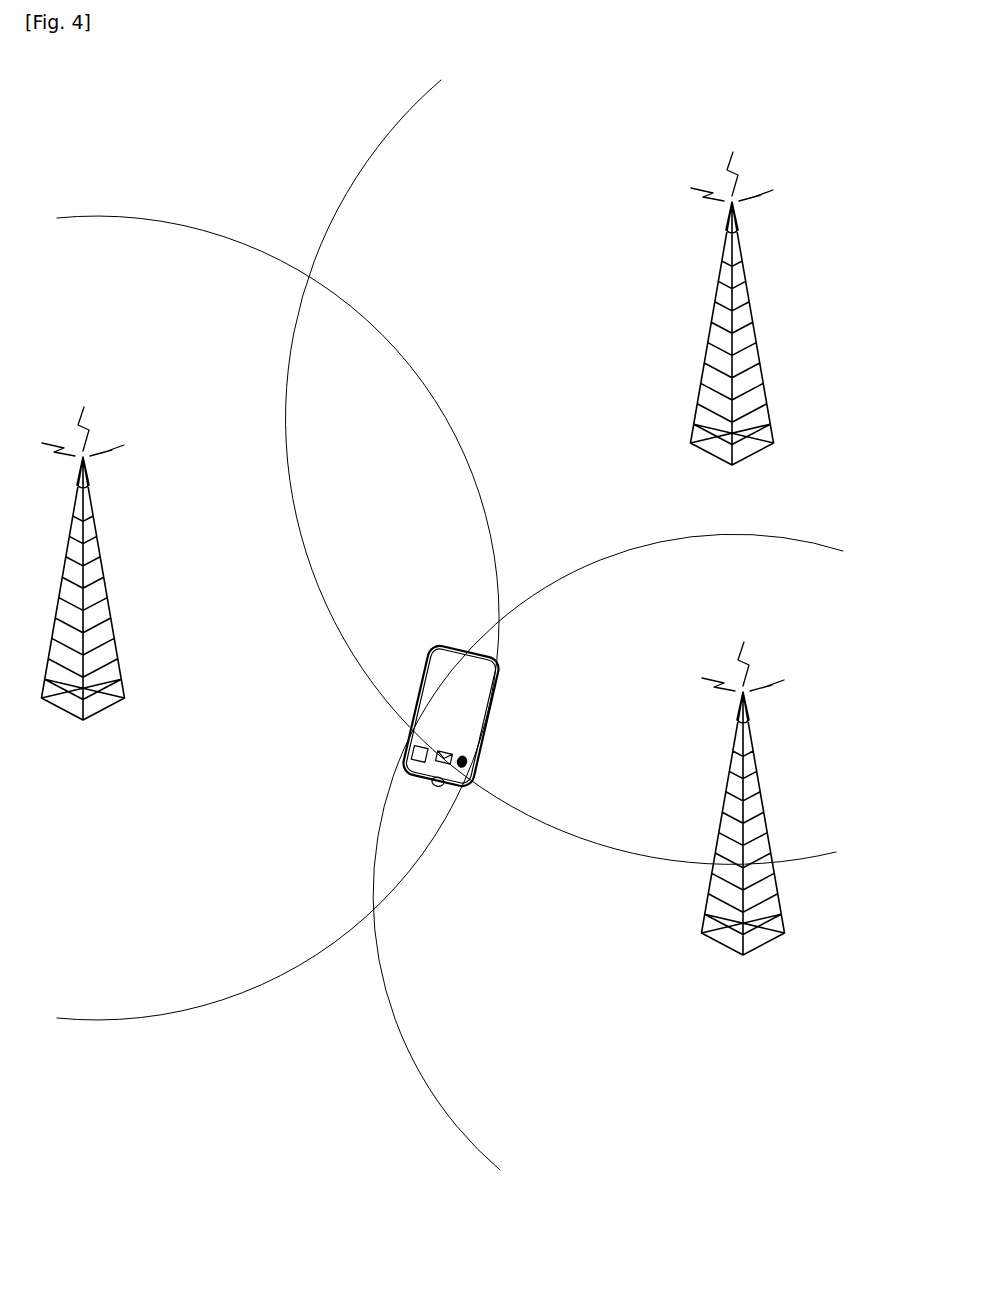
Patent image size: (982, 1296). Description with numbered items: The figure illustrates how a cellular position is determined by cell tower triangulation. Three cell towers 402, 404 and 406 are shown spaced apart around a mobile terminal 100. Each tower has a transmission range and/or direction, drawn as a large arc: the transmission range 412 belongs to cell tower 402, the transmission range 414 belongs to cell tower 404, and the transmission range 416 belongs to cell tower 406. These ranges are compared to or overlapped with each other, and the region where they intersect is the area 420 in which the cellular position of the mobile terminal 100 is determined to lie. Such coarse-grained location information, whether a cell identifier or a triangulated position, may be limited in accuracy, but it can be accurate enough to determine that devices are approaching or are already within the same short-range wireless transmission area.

The mobile terminal 100 is at (430, 675).
The cell tower 402 is at (115, 425).
The cell tower 404 is at (703, 223).
The cell tower 406 is at (712, 670).
The transmission range 412 is at (170, 225).
The transmission range 414 is at (365, 167).
The transmission range 416 is at (437, 1099).
The area 420 is at (425, 647).